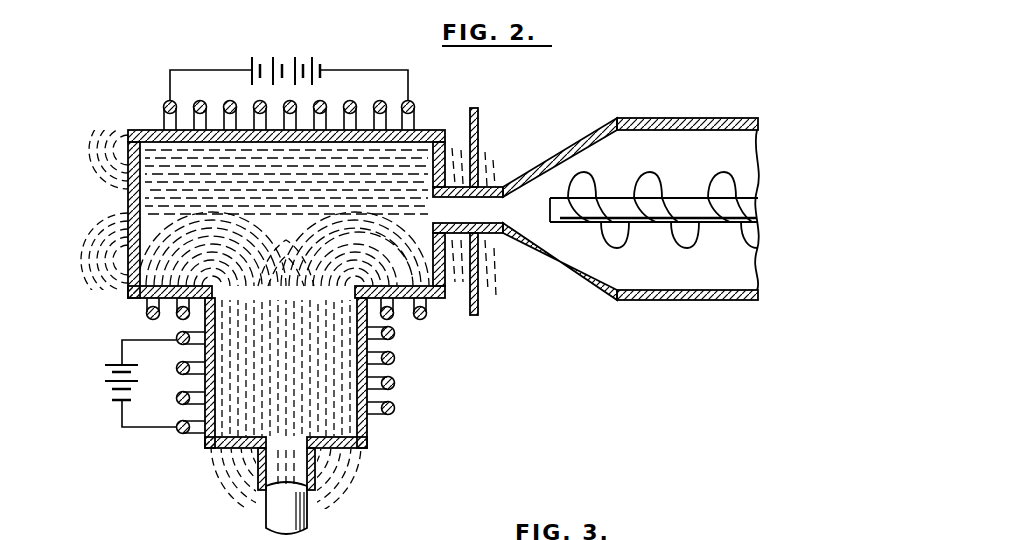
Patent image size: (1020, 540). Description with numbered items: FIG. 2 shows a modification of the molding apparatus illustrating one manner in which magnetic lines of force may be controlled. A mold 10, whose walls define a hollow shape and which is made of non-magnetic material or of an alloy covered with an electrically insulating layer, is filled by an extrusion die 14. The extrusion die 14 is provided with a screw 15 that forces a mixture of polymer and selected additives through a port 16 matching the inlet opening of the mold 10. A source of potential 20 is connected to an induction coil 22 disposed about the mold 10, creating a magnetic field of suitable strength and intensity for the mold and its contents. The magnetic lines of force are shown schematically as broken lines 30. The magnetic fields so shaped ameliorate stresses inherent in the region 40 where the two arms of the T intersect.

The mold 10 is at (424, 126).
The extrusion die 14 is at (693, 118).
The screw 15 is at (657, 190).
The port 16 is at (500, 217).
The source of potential 20 is at (104, 379).
The induction coil 22 is at (394, 357).
The magnetic lines of force 30 is at (328, 398).
The region where the two arms of the T intersect 40 is at (130, 291).